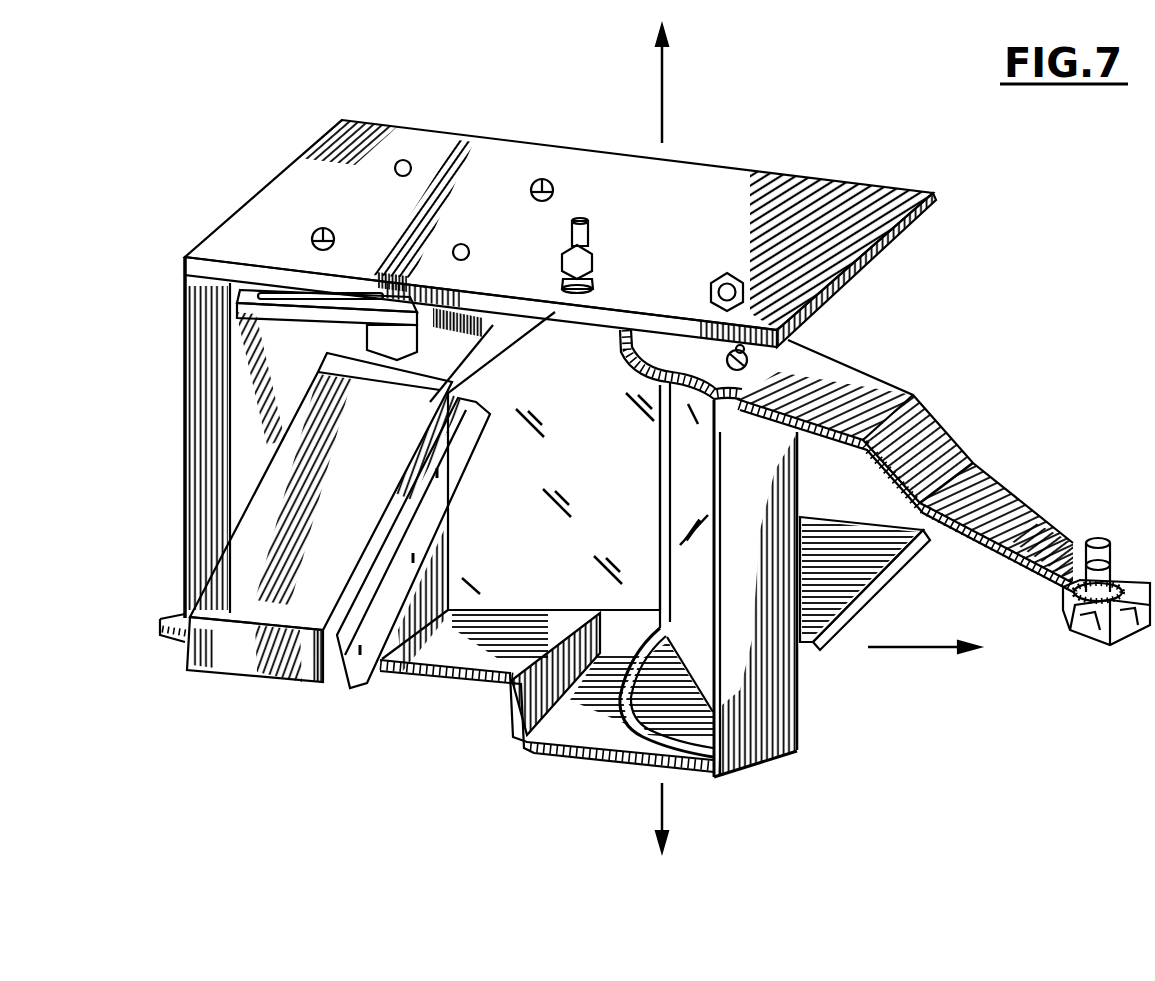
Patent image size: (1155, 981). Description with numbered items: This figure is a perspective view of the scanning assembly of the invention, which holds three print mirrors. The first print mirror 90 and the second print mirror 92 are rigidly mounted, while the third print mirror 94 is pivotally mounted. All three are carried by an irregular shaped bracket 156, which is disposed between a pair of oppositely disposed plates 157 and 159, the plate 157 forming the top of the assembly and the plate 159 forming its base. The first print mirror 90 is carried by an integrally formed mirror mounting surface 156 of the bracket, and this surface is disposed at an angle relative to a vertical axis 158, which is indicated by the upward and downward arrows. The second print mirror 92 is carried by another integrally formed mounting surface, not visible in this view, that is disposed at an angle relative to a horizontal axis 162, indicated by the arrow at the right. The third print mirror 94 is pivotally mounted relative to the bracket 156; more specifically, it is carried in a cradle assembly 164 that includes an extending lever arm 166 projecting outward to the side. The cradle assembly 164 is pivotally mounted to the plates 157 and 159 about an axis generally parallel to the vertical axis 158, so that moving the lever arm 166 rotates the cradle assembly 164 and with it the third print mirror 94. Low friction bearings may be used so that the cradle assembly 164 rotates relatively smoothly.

The plate 157 is at (479, 155).
The vertical axis 158 is at (696, 438).
The bracket 156 is at (200, 481).
The first print mirror 90 is at (379, 668).
The plate 159 is at (466, 672).
The second print mirror 92 is at (533, 527).
The third print mirror 94 is at (709, 577).
The cradle assembly 164 is at (760, 718).
The lever arm 166 is at (922, 421).
The horizontal axis 162 is at (924, 686).